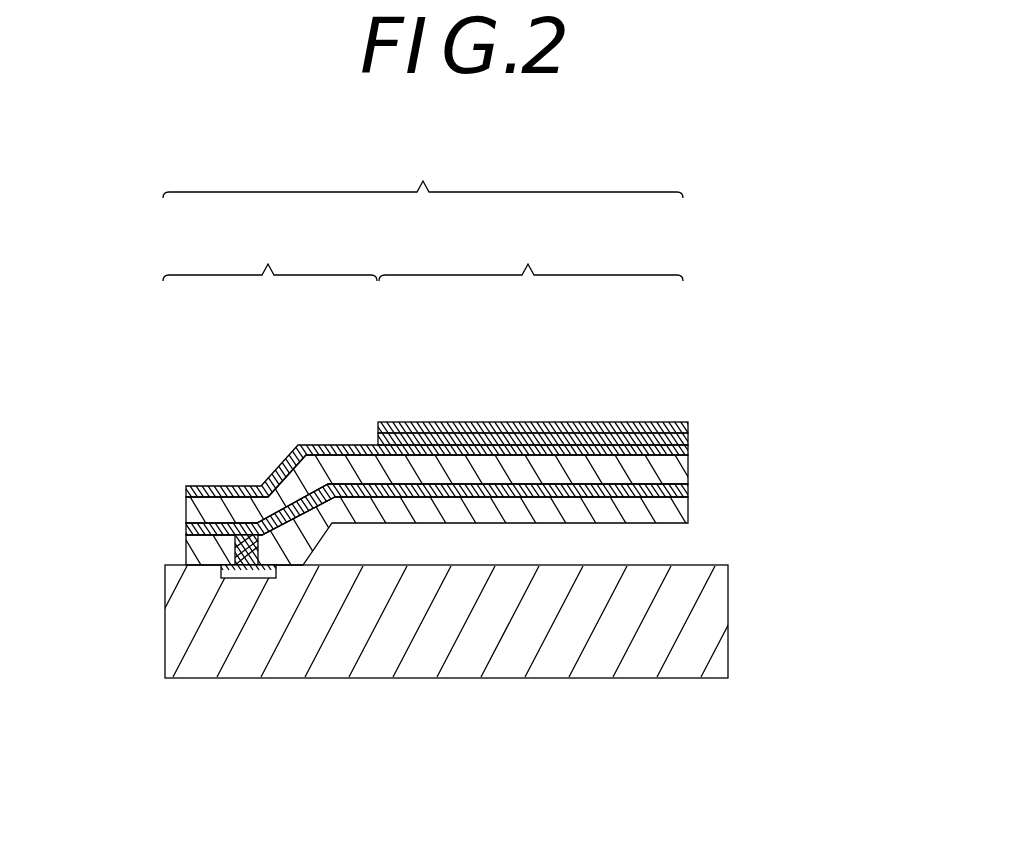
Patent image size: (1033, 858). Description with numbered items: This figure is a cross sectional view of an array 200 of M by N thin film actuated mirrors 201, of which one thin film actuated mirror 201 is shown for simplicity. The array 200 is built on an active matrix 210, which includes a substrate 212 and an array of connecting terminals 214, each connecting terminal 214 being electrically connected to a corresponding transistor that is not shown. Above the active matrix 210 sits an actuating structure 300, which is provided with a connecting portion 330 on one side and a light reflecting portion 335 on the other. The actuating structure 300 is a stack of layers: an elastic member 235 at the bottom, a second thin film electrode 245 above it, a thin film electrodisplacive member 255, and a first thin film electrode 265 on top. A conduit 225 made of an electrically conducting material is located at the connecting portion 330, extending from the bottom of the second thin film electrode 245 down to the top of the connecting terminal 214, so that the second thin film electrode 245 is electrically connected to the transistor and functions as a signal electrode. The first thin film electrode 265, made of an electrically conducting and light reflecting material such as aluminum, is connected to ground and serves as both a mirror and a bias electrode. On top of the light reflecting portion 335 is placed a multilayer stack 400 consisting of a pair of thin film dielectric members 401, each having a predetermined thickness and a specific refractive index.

The array of M×N thin film actuated mirrors 200 is at (792, 120).
The thin film actuated mirror 201 is at (423, 167).
The connecting portion 330 is at (270, 250).
The light reflecting portion 335 is at (531, 250).
The multilayer stack of thin film dielectric members 400 is at (435, 447).
The thin film dielectric member 401 is at (659, 428).
The actuating structure 300 is at (440, 426).
The first thin film electrode 265 is at (300, 445).
The thin film electrodisplacive member 255 is at (455, 467).
The second thin film electrode 245 is at (363, 480).
The elastic member 235 is at (537, 507).
The conduit 225 is at (231, 543).
The active matrix 210 is at (440, 593).
The substrate 212 is at (423, 665).
The connecting terminal 214 is at (245, 579).